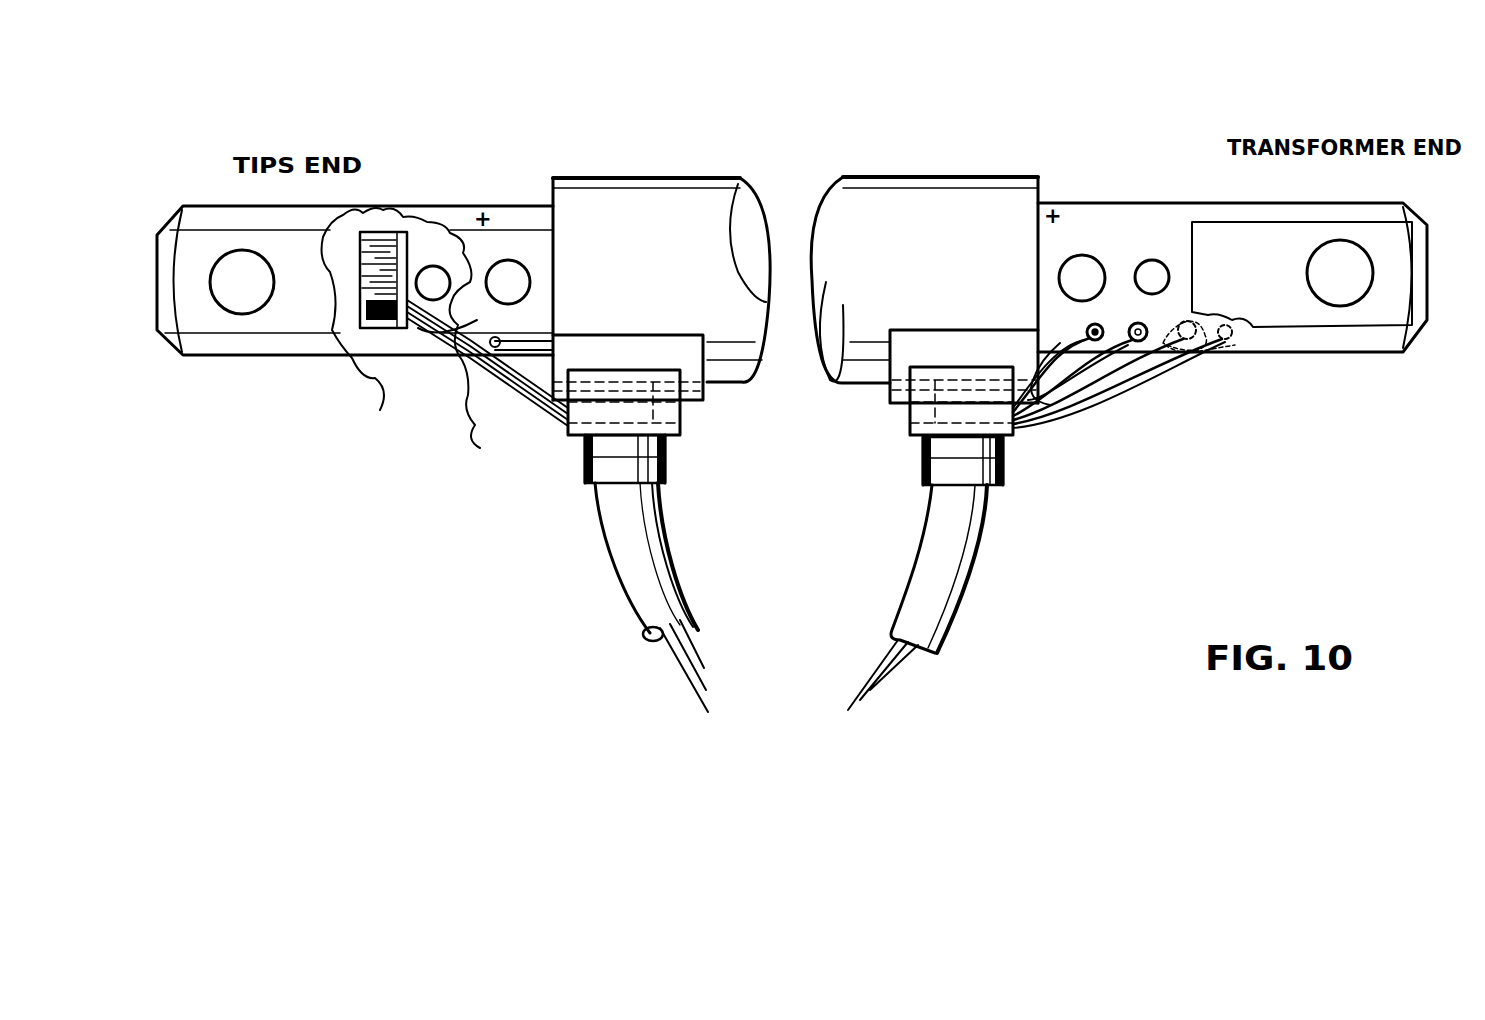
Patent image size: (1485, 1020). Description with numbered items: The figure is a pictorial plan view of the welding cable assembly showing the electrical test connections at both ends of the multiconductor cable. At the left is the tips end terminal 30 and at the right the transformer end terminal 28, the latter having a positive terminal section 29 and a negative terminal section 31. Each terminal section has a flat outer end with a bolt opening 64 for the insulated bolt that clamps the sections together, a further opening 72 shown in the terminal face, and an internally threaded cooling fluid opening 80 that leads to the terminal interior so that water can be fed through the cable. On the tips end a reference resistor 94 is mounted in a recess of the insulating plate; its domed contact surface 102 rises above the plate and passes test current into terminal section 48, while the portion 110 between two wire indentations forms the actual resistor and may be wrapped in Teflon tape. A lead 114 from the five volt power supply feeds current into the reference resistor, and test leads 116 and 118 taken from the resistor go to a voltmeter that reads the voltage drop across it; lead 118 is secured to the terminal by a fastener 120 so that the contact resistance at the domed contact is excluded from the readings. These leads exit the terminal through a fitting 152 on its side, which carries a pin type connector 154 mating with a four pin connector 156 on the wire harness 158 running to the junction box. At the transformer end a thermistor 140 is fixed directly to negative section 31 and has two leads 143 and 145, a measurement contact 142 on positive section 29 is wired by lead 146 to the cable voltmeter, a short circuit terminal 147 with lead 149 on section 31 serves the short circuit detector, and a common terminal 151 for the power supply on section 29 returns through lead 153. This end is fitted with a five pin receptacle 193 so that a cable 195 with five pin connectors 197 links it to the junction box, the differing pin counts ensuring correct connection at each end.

The terminal 28 is at (1104, 160).
The positive terminal section 29 is at (1093, 218).
The terminal 30 is at (467, 172).
The negative terminal section 31 is at (1157, 225).
The terminal section 48 is at (500, 210).
The bolt opening 64 is at (214, 296).
The hole 72 is at (437, 293).
The cooling fluid opening 80 is at (512, 258).
The reference resistor 94 is at (350, 280).
The domed contact surface 102 is at (383, 235).
The reference resistor portion 110 is at (370, 278).
The lead 114 is at (520, 380).
The test lead 116 is at (478, 375).
The test lead 118 is at (477, 320).
The fastener 120 is at (500, 344).
The thermistor 140 is at (1197, 355).
The measurement contact 142 is at (1143, 357).
The thermistor lead 143 is at (1100, 407).
The thermistor lead 145 is at (1127, 387).
The lead 146 is at (1078, 420).
The short circuit terminal 147 is at (1230, 333).
The lead 149 is at (1200, 346).
The common terminal 151 is at (1060, 427).
The fitting 152 is at (568, 445).
The lead 153 is at (1043, 447).
The pin type connector 154 is at (665, 447).
The mating connector 156 is at (665, 468).
The wire harness 158 is at (643, 588).
The five pin receptacle 193 is at (920, 450).
The cable 195 is at (940, 590).
The five pin connector 197 is at (920, 472).